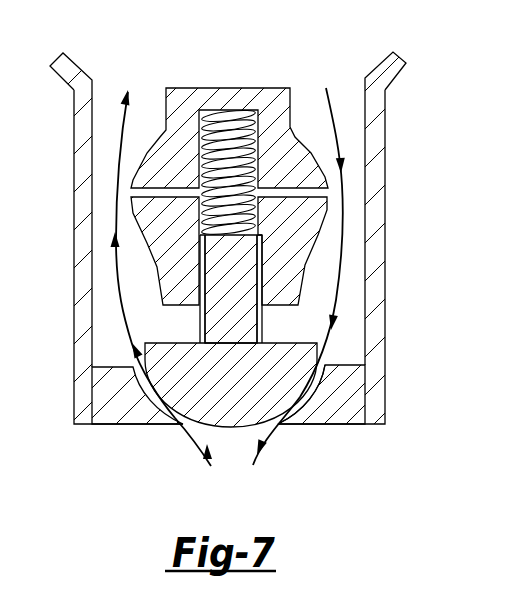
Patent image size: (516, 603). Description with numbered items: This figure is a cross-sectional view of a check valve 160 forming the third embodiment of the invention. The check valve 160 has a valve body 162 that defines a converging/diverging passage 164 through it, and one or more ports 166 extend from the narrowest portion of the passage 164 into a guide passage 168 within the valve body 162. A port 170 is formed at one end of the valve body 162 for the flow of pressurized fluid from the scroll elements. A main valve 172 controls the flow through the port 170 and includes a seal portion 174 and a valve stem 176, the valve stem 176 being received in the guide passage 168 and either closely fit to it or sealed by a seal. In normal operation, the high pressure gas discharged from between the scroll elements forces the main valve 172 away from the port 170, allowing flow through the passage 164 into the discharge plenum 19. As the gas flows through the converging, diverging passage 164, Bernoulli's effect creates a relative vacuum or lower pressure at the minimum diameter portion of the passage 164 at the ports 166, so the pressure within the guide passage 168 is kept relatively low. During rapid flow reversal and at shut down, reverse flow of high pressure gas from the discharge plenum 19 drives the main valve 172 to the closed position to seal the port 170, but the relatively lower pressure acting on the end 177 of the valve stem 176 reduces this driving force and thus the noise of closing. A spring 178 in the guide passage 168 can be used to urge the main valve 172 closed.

The discharge plenum 19 is at (232, 29).
The check valve 160 is at (421, 95).
The valve body 162 is at (73, 143).
The converging/diverging passage 164 is at (353, 217).
The ports 166 is at (128, 192).
The guide passage 168 is at (257, 117).
The port 170 is at (268, 427).
The main valve 172 is at (220, 333).
The seal portion 174 is at (220, 428).
The valve stem 176 is at (260, 333).
The end of the valve stem 177 is at (257, 235).
The spring 178 is at (213, 117).